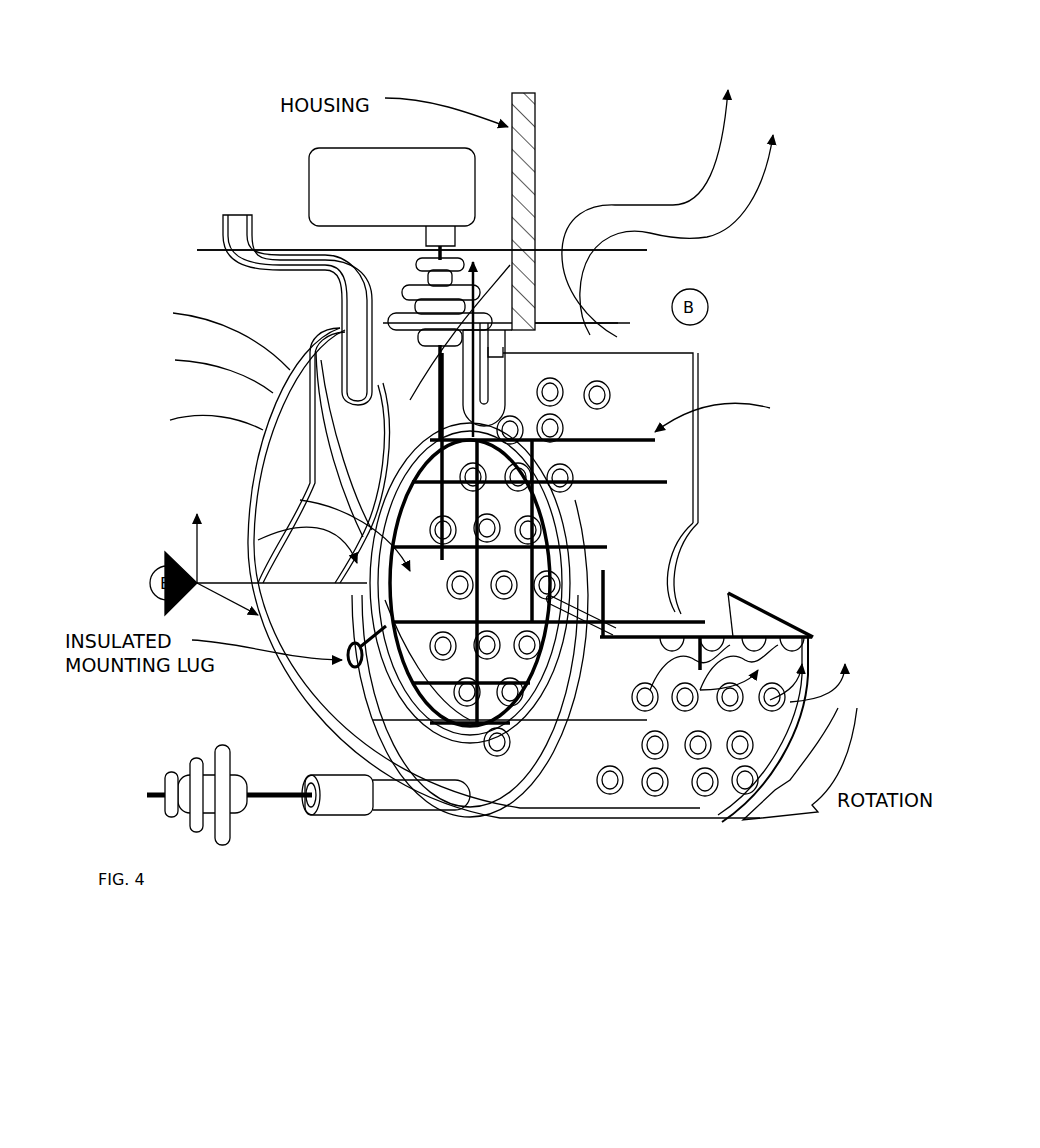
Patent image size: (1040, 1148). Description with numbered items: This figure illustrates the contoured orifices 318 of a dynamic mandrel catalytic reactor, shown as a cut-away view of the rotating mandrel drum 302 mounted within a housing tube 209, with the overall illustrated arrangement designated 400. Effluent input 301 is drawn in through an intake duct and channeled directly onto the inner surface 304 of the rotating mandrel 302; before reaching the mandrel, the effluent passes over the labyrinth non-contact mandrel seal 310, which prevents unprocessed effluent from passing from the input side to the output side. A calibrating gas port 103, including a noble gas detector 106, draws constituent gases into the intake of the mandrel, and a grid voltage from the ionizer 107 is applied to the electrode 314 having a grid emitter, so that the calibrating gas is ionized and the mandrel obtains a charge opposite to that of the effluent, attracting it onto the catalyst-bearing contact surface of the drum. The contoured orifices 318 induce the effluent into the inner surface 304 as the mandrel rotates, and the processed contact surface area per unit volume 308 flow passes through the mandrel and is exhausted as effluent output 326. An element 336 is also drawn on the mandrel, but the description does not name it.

The calibrating gas port 103 is at (237, 210).
The ionizer 107 is at (589, 294).
The tube 209 is at (290, 473).
The effluent input 301 is at (235, 442).
The rotating mandrel drum 302 is at (382, 594).
The inner surface 304 is at (390, 704).
The contact surface area per unit volume flow 308 is at (604, 317).
The labyrinth non-contact mandrel seal 310 is at (600, 440).
The electrode having grid emitter 314 is at (497, 388).
The contoured orifices 318 is at (743, 772).
The effluent output 326 is at (784, 396).
The mandrel 336 is at (491, 697).
The ion mobility detector apparatus 400 is at (806, 270).
The noble gas detector 106 is at (362, 818).